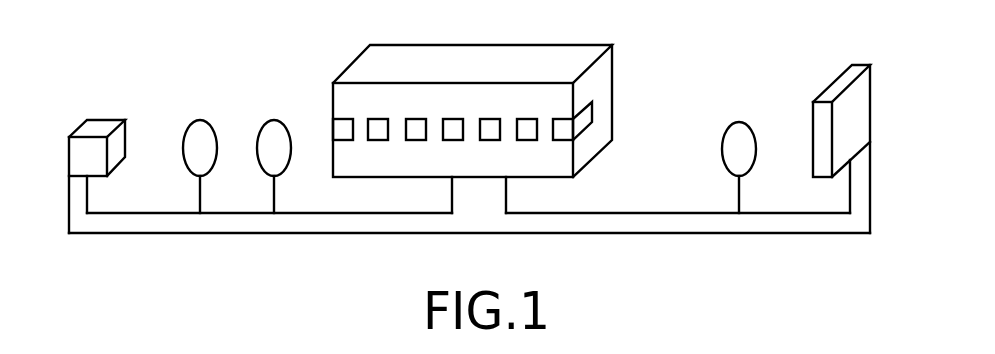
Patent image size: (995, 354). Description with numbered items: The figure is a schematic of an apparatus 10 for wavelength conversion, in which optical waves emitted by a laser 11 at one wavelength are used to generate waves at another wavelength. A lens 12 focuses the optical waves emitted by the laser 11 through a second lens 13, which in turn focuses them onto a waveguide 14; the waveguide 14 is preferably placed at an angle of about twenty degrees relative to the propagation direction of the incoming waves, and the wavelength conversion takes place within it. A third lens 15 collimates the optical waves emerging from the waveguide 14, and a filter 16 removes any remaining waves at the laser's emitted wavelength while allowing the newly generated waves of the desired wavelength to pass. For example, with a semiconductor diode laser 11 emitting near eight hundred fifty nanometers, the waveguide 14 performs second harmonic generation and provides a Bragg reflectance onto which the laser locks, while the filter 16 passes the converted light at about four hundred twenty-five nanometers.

The apparatus 10 is at (365, 233).
The laser 11 is at (97, 120).
The lens 12 is at (200, 120).
The second lens 13 is at (274, 120).
The waveguide 14 is at (548, 177).
The third lens 15 is at (739, 122).
The filter 16 is at (840, 73).